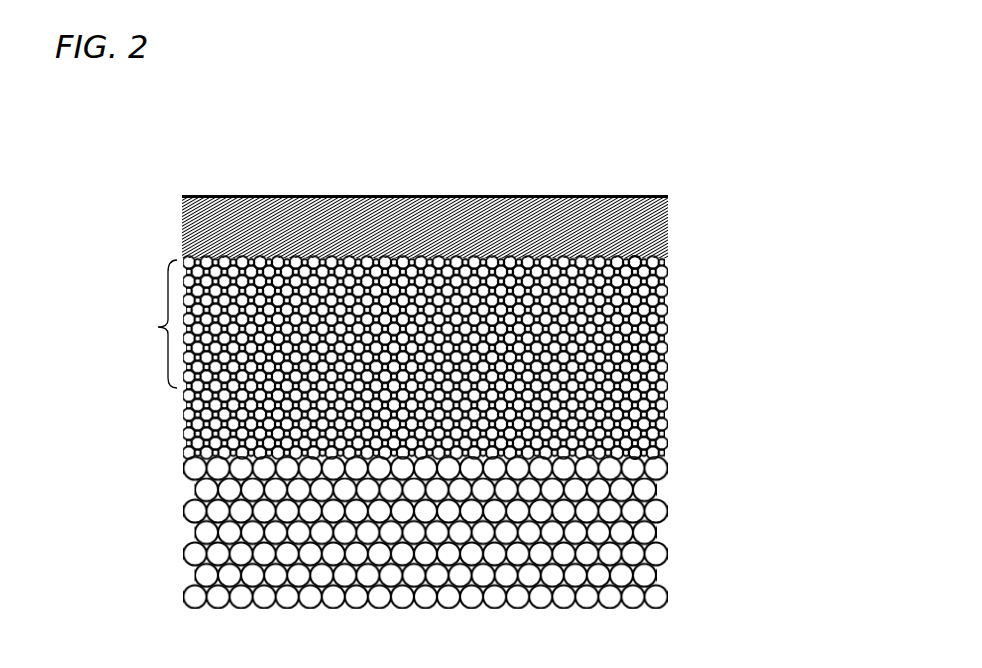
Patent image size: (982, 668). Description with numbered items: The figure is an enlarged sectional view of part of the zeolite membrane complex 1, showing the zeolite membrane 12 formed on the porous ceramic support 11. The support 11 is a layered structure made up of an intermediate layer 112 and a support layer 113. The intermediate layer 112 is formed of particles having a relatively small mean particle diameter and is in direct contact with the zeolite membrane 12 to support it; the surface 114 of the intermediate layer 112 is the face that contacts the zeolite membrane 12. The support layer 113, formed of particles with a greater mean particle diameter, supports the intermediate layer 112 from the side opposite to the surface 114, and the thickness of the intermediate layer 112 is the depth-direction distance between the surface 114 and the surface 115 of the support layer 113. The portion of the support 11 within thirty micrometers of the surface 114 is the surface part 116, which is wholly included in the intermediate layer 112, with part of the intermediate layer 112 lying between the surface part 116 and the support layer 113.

The zeolite membrane complex 1 is at (160, 181).
The zeolite membrane 12 is at (173, 232).
The support 11 is at (82, 466).
The intermediate layer 112 is at (173, 439).
The support layer 113 is at (175, 513).
The surface of the intermediate layer 114 is at (642, 247).
The surface of the support layer 115 is at (640, 442).
The surface part 116 is at (140, 324).